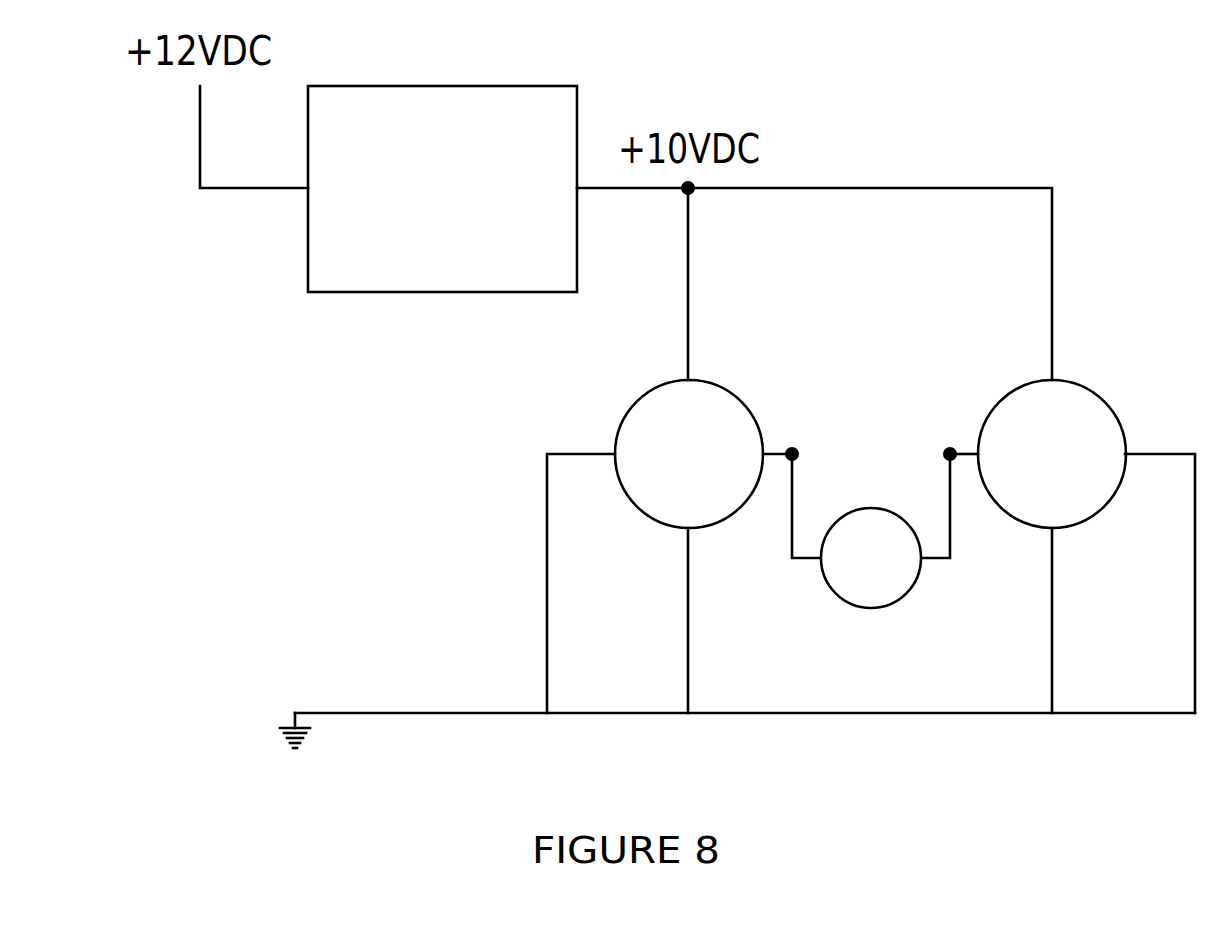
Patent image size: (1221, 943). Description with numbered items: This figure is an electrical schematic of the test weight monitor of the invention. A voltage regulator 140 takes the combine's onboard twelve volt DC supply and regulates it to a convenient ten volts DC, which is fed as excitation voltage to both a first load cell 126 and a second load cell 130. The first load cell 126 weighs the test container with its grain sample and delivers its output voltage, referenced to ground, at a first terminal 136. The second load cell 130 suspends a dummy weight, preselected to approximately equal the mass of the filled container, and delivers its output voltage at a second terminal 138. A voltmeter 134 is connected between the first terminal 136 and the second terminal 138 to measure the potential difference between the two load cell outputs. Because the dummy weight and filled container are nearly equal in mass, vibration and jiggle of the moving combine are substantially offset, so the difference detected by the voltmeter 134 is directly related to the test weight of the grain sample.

The first load cell 126 is at (731, 432).
The second load cell 130 is at (1094, 432).
The voltmeter 134 is at (926, 592).
The first terminal 136 is at (834, 476).
The second terminal 138 is at (917, 425).
The voltage regulator 140 is at (498, 158).